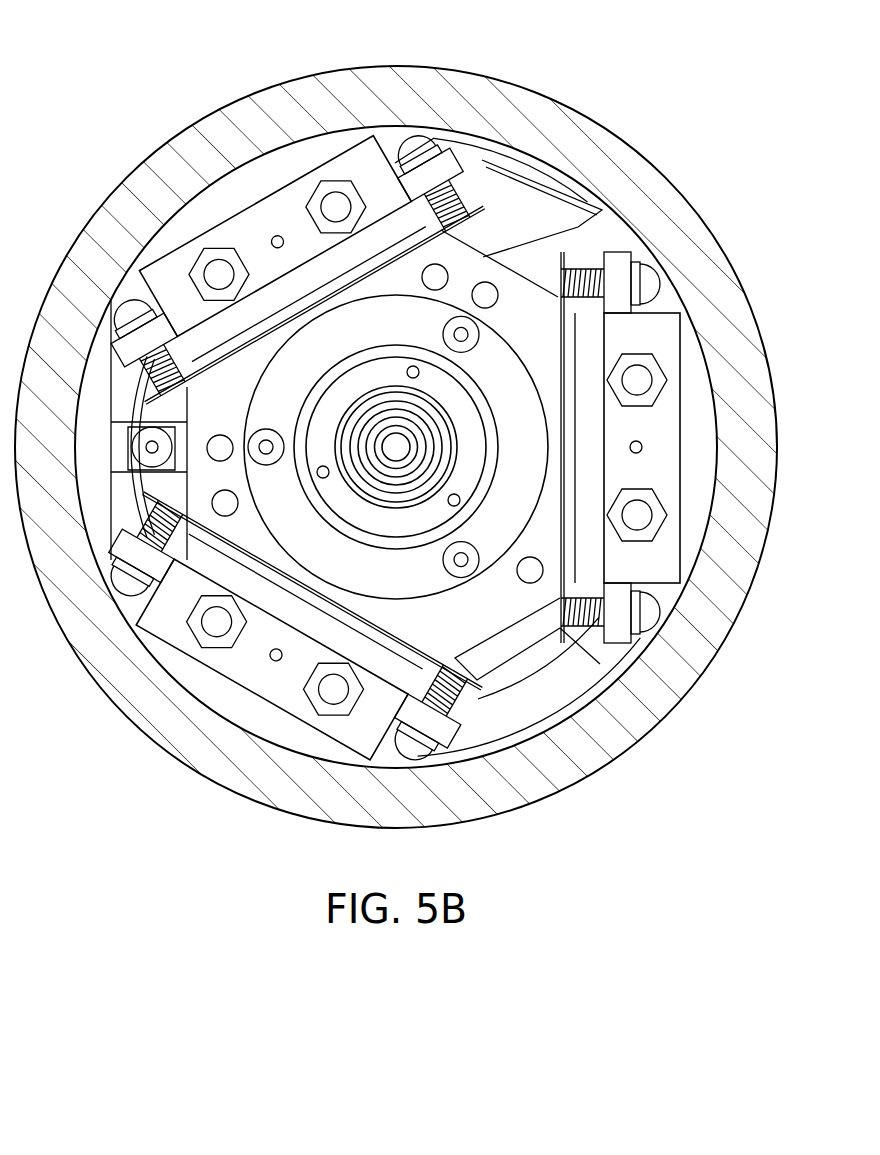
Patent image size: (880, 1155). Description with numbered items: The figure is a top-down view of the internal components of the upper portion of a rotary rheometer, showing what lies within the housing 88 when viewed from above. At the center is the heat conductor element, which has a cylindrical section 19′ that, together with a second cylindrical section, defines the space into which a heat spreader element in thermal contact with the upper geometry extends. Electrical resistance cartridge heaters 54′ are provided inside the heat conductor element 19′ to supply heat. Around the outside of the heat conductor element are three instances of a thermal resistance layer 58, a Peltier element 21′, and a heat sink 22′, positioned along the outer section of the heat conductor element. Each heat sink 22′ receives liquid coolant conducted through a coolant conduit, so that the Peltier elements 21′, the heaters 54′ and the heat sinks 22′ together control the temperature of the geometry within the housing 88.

The housing 88 is at (452, 68).
The cylindrical section of heat conductor element 19′ is at (478, 628).
The heat sink 22′ is at (287, 183).
The Peltier element 21′ is at (282, 288).
The electrical resistance cartridge heater 54′ is at (434, 290).
The pivot rail 58 is at (566, 366).